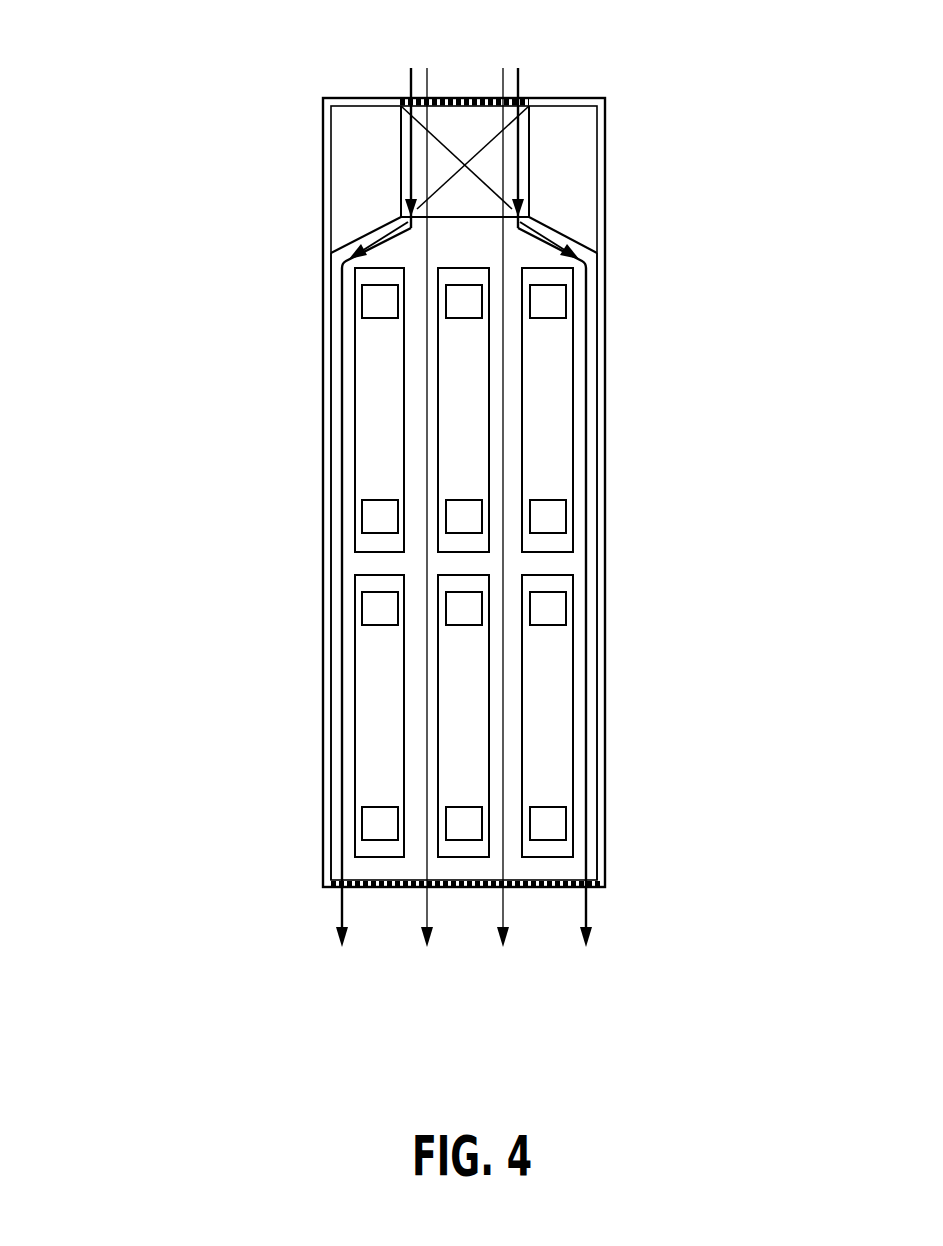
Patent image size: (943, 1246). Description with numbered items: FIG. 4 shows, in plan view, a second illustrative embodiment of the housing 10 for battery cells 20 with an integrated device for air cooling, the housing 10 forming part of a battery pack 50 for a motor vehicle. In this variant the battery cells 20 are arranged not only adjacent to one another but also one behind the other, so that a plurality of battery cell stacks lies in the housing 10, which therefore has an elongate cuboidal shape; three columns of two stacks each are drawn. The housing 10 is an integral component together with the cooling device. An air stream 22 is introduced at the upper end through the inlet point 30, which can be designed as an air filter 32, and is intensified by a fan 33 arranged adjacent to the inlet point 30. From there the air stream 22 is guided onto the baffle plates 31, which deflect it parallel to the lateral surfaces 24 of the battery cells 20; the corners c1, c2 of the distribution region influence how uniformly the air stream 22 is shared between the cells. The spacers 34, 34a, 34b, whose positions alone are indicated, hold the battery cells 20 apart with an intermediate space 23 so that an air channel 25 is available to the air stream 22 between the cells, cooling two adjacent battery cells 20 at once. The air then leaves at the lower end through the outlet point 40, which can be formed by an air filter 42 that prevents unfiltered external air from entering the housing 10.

The housing 10 is at (335, 453).
The battery pack 50 is at (204, 102).
The air stream 22 is at (392, 79).
The inlet point 30 is at (523, 117).
The air filter 32 is at (534, 76).
The fan 33 is at (548, 155).
The baffle plate 31 is at (363, 224).
The corner c1 is at (620, 256).
The corner c2 is at (308, 255).
The battery cell 20 is at (553, 372).
The spacer 34 is at (644, 636).
The spacer 34a is at (644, 636).
The spacer 34b is at (526, 437).
The lateral surface 24 is at (341, 698).
The intermediate space 23 is at (476, 634).
The air channel 25 is at (496, 830).
The outlet point 40 is at (528, 937).
The air filter 42 is at (603, 910).